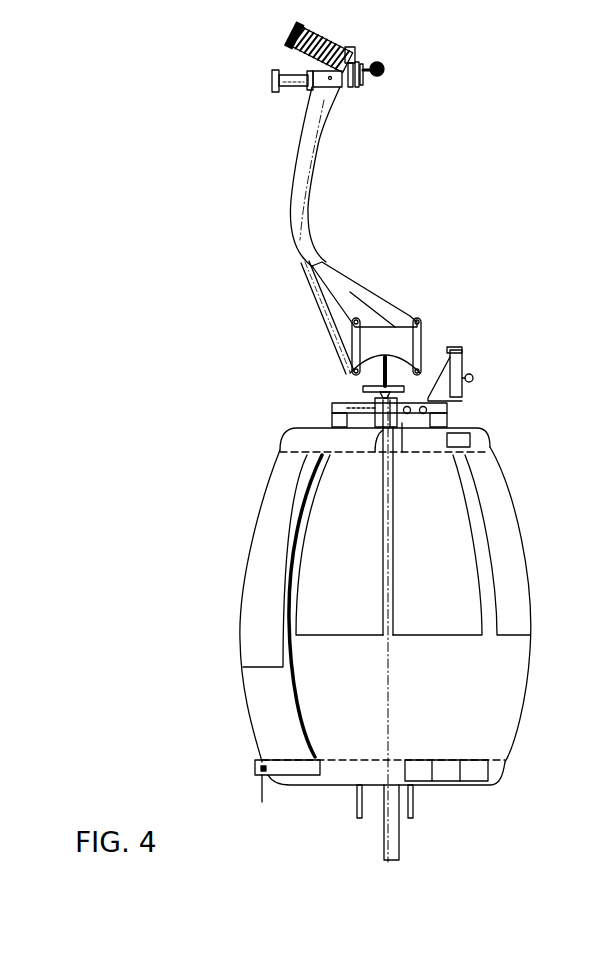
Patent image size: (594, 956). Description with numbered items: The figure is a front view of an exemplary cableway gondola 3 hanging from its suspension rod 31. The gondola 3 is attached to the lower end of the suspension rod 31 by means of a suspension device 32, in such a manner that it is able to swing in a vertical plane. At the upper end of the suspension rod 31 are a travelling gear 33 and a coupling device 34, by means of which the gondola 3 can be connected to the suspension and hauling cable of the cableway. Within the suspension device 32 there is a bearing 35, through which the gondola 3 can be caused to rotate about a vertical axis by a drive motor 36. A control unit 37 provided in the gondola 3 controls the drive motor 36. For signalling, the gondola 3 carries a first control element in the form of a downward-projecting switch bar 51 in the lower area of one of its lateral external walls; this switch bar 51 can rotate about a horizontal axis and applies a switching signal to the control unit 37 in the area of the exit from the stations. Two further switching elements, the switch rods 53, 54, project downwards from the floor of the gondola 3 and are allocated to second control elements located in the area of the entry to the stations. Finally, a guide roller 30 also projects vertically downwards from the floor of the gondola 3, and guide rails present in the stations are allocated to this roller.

The cableway gondola 3 is at (528, 572).
The guide roller 30 is at (400, 838).
The suspension rod 31 is at (312, 190).
The suspension device 32 is at (423, 347).
The travelling gear 33 is at (270, 83).
The coupling device 34 is at (380, 62).
The bearing 35 is at (368, 390).
The drive motor 36 is at (330, 417).
The control unit 37 is at (475, 433).
The switch bar 51 is at (258, 787).
The switch rod 53 is at (415, 803).
The switch rod 54 is at (355, 807).